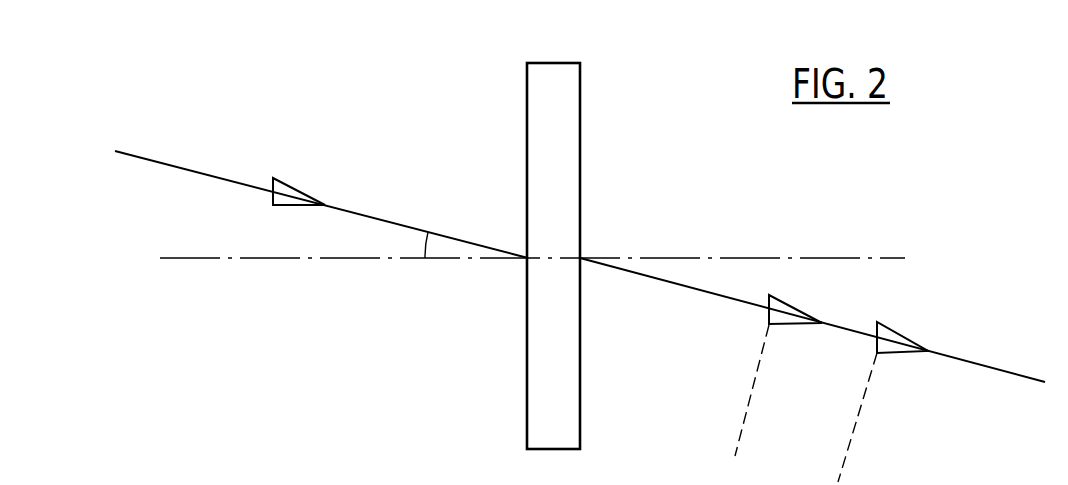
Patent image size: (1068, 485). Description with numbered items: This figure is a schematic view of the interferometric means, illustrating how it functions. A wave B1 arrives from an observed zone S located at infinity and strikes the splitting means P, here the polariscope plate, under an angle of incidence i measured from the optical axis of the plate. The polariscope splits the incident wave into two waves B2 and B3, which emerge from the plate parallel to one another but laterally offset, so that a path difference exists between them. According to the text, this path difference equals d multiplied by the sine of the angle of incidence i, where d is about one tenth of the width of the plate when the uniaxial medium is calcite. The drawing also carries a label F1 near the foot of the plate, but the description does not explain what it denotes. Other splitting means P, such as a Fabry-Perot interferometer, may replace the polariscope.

The observed zone S is at (564, 253).
The means for splitting a wave or beam P is at (548, 63).
The angle of incidence i is at (410, 245).
The wave B1 is at (303, 189).
The wave B2 is at (793, 311).
The wave B3 is at (897, 340).
The focal point F1 is at (458, 474).